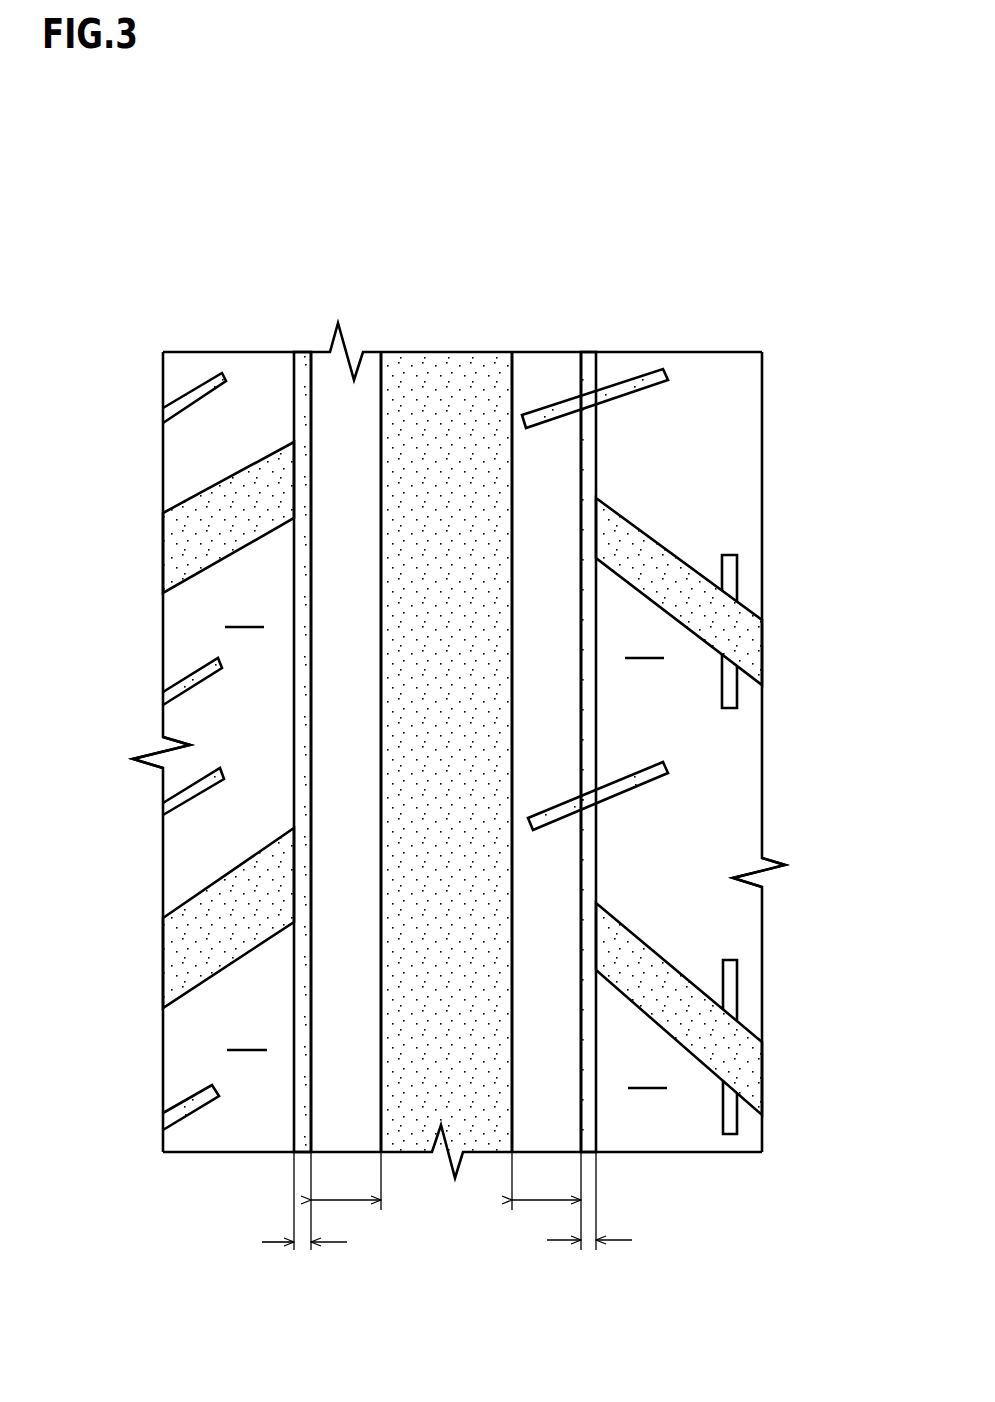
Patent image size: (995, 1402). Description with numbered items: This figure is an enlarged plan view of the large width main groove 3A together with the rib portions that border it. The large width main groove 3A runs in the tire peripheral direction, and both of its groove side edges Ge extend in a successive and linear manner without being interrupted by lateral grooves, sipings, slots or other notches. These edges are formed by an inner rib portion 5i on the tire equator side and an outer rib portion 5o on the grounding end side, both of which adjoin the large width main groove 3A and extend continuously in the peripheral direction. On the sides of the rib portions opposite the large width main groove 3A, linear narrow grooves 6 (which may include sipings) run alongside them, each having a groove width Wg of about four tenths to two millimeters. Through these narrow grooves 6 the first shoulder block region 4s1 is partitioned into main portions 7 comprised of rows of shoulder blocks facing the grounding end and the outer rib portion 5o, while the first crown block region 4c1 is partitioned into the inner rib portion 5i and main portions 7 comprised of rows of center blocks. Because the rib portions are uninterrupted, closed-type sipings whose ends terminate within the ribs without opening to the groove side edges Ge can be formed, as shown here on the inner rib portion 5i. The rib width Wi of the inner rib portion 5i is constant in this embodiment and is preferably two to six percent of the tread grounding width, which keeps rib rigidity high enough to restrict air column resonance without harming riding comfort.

The large width main groove 3A is at (443, 413).
The groove side edge Ge is at (381, 405).
The narrow groove 6 is at (302, 366).
The outer rib portion 5o is at (340, 893).
The inner rib portion 5i is at (555, 858).
The first shoulder block region 4s1 is at (112, 857).
The first crown block region 4c1 is at (803, 788).
The main portion 7 is at (203, 858).
The rib width of inner rib portion Wi is at (446, 1193).
The groove width of narrow groove Wg is at (447, 1214).